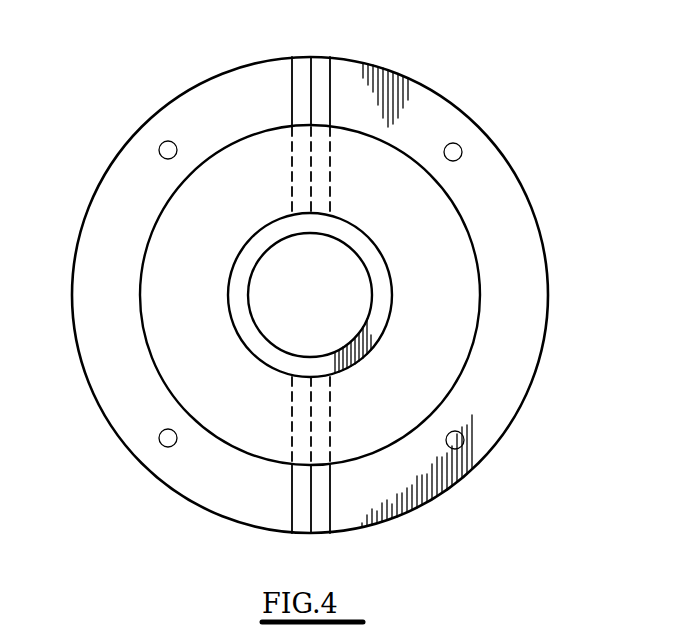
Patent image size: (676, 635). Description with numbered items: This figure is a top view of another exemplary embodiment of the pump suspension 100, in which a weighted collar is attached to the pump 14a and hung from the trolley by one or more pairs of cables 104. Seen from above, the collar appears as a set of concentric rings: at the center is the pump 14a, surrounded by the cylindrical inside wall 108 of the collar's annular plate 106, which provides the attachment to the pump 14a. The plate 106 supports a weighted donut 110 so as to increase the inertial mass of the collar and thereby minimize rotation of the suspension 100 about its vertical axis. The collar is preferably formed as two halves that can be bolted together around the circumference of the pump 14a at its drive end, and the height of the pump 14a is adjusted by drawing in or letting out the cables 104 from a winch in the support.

The pump suspension embodiment 100 is at (150, 505).
The cables 104 is at (168, 150).
The annular plate 106 is at (368, 103).
The cylindrical inside wall 108 is at (380, 318).
The weighted donut 110 is at (465, 295).
The pump 14a is at (328, 285).